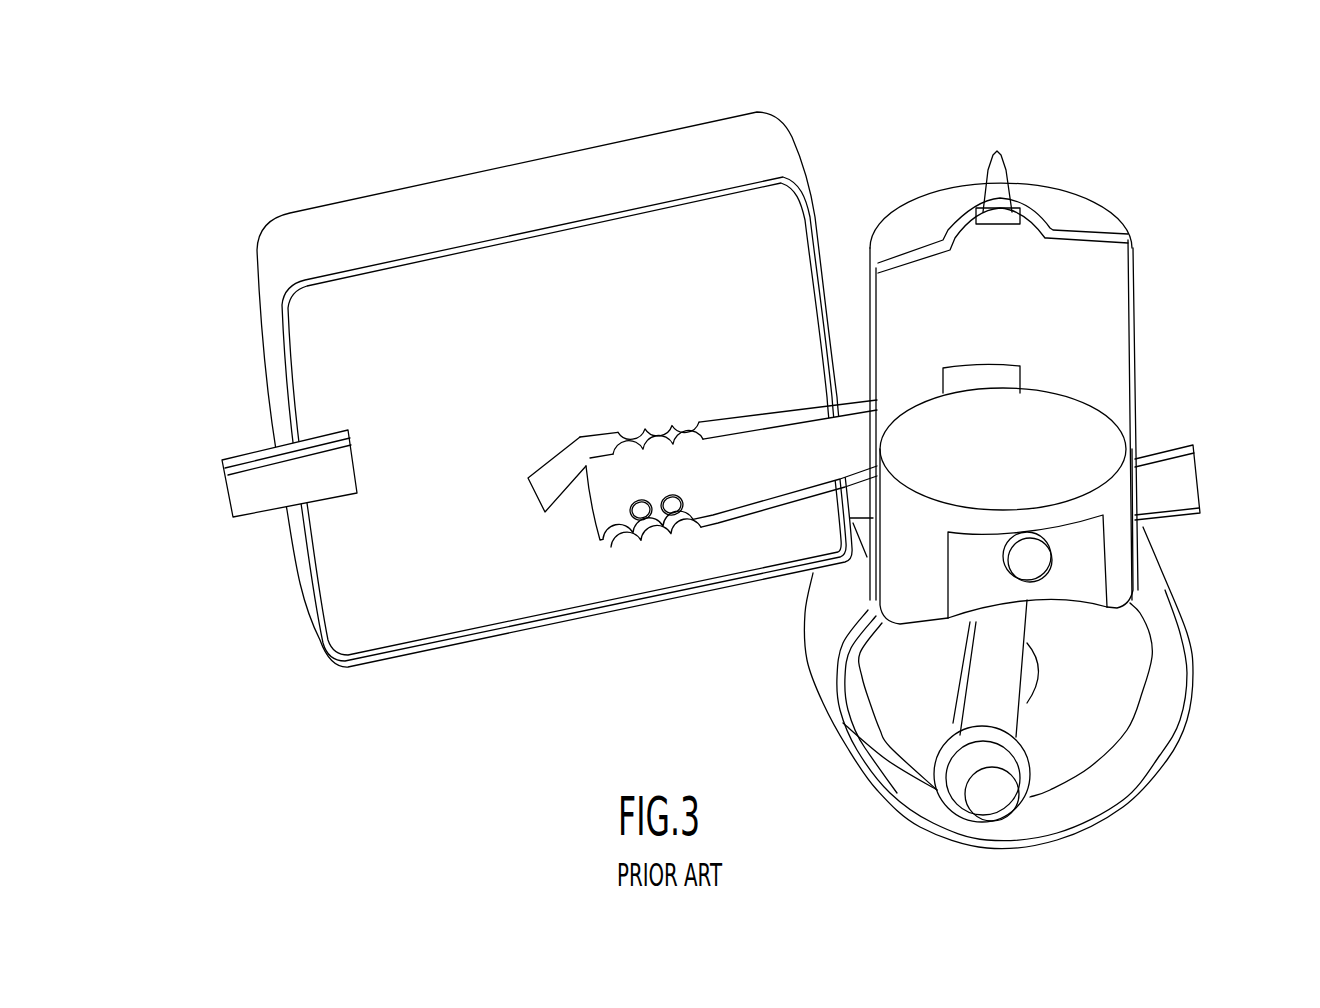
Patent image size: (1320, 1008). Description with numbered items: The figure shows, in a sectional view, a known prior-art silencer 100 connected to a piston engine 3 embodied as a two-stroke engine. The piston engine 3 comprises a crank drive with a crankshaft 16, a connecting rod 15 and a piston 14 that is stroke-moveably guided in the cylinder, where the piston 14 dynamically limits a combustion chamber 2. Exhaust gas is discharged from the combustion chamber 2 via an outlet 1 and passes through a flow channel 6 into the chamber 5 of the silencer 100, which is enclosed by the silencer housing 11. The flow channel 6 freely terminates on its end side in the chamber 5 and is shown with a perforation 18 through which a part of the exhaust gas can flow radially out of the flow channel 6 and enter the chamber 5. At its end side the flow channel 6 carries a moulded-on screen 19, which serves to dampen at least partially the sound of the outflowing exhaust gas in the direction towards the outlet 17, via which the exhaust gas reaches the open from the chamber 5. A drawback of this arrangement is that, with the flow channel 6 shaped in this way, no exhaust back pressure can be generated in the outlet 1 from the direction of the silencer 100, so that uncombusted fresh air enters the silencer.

The silencer 100 is at (287, 167).
The outlet 1 is at (884, 418).
The combustion chamber 2 is at (1034, 319).
The piston engine 3 is at (1137, 307).
The chamber 5 is at (606, 298).
The flow channel 6 is at (750, 452).
The silencer housing 11 is at (632, 605).
The piston 14 is at (1100, 457).
The connecting rod 15 is at (990, 657).
The crankshaft 16 is at (1113, 703).
The outlet 17 is at (262, 443).
The perforation 18 is at (628, 430).
The screen 19 is at (535, 474).